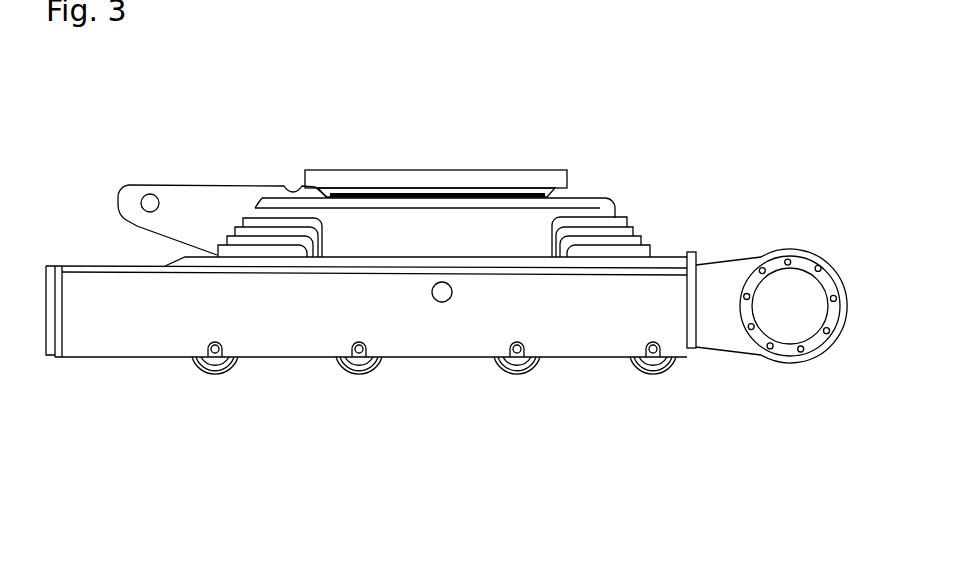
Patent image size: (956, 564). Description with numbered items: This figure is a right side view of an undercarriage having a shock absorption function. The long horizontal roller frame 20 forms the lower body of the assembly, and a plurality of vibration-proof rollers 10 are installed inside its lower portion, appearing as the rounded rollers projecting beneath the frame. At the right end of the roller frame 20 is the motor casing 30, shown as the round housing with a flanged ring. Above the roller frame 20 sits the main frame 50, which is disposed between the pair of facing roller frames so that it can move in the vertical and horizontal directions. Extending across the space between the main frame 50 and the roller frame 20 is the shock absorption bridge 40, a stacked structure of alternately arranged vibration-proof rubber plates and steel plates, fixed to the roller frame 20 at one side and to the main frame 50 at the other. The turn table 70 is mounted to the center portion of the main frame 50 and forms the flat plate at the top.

The vibration-proof rollers 10 is at (513, 368).
The roller frame 20 is at (579, 340).
The motor casing 30 is at (798, 262).
The shock absorption bridge 40 is at (635, 229).
The main frame 50 is at (530, 232).
The turn table 70 is at (493, 183).